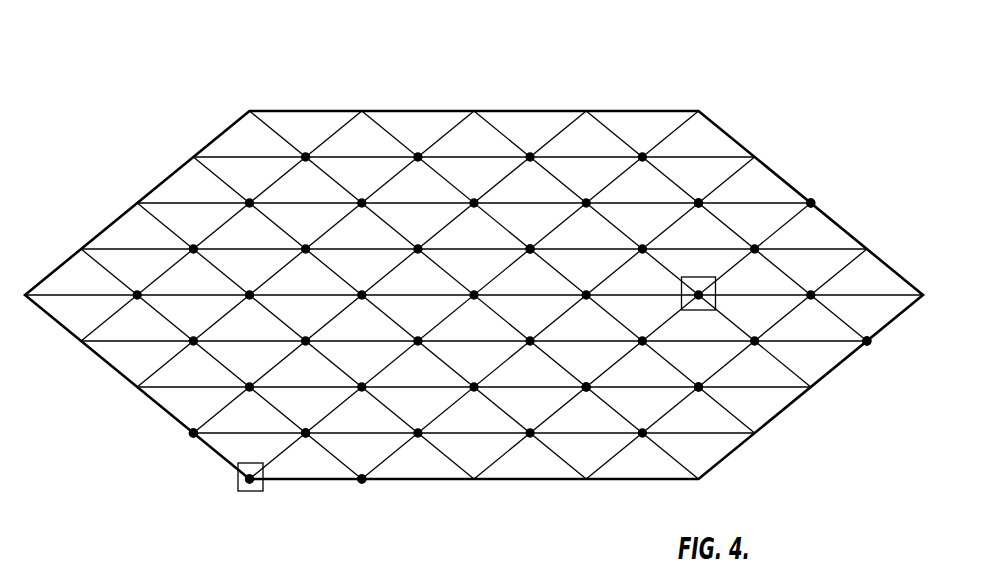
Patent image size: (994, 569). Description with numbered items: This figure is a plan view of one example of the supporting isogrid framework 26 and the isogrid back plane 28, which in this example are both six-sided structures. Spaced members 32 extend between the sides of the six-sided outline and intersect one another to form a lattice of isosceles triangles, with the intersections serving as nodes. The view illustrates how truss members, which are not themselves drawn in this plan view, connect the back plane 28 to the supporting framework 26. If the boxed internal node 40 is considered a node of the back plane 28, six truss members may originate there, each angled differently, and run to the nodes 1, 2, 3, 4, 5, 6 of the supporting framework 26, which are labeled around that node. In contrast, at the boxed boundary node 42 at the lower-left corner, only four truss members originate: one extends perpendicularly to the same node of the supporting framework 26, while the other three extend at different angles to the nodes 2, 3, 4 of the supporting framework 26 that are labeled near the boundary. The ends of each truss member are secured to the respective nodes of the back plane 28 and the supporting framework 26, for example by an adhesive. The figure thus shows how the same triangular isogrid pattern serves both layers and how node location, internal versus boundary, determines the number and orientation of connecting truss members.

The supporting isogrid framework 26 is at (790, 413).
The isogrid back plane 28 is at (474, 295).
The spaced members 32 is at (273, 157).
The internal node 40 is at (700, 277).
The boundary node 42 is at (247, 491).
The node of supporting framework 1 is at (460, 336).
The node of supporting framework 2 is at (448, 362).
The node of supporting framework 3 is at (445, 396).
The node of supporting framework 4 is at (445, 397).
The node of supporting framework 5 is at (868, 326).
The node of supporting framework 6 is at (821, 198).